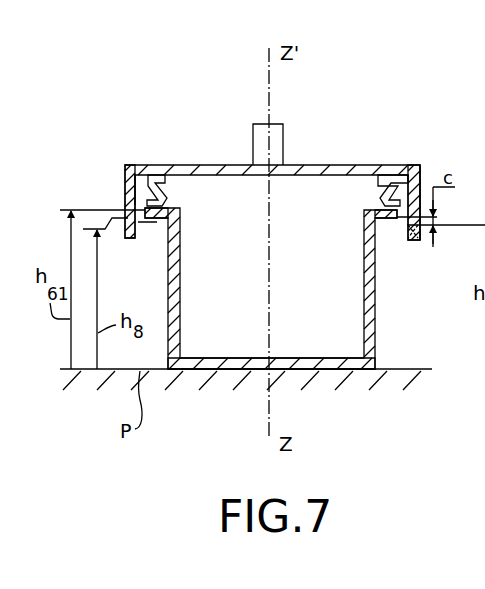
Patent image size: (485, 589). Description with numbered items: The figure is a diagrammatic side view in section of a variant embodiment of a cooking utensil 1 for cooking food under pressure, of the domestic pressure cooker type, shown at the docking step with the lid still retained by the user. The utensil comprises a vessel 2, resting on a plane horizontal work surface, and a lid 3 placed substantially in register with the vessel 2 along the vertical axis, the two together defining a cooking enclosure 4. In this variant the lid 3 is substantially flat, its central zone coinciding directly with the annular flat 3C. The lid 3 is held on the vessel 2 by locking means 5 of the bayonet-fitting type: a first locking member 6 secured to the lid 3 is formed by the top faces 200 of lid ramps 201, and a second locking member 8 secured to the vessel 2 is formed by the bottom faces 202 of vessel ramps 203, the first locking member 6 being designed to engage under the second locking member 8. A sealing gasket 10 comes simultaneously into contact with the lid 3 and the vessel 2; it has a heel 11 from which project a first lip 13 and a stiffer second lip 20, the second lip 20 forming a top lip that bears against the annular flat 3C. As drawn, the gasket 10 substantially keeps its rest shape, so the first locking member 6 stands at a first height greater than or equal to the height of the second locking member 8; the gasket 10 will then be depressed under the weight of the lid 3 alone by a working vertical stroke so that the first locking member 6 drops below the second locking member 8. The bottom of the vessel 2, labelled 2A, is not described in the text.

The cooking utensil 1 is at (146, 106).
The vessel 2 is at (180, 330).
The container bottom 2A is at (247, 371).
The lid 3 is at (222, 163).
The annular flat 3C is at (138, 167).
The cooking enclosure 4 is at (313, 289).
The locking means 5 is at (120, 239).
The first locking member 6 is at (150, 224).
The second locking member 8 is at (164, 208).
The sealing gasket 10 is at (402, 172).
The heel 11 is at (420, 178).
The first lip 13 is at (152, 192).
The second lip 20 is at (157, 177).
The top face of lid ramp 200 is at (383, 172).
The lid ramp 201 is at (416, 235).
The bottom face of vessel ramp 202 is at (388, 220).
The vessel ramp 203 is at (345, 164).